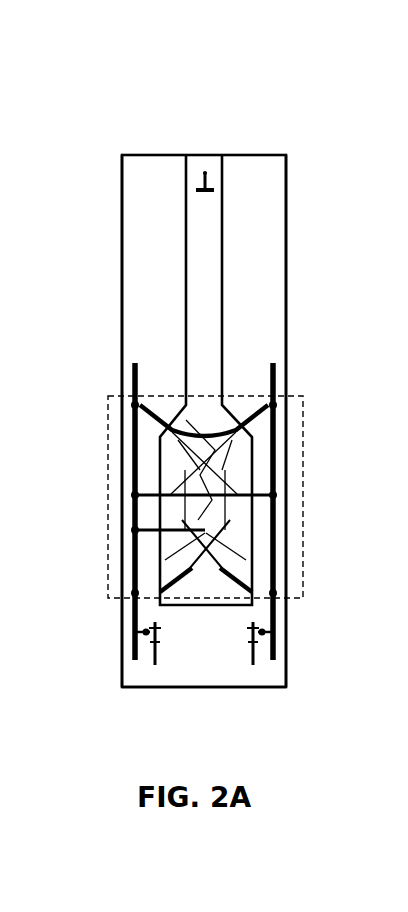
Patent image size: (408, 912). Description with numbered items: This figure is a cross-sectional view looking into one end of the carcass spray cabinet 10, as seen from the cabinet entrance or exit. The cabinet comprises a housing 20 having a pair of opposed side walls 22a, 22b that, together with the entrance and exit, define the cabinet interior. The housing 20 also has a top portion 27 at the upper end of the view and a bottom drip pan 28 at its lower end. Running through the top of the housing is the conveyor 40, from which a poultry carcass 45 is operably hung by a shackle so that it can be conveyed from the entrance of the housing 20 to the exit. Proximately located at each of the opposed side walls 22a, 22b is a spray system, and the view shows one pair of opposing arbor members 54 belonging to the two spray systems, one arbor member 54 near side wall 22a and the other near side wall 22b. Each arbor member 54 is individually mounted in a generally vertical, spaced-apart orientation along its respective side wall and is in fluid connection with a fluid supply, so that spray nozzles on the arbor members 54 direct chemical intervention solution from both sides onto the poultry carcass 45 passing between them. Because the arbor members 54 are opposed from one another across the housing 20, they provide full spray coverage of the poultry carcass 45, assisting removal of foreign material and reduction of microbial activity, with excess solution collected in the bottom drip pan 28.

The carcass spray cabinet 10 is at (133, 58).
The housing 20 is at (122, 172).
The side wall 22a is at (122, 298).
The side wall 22b is at (286, 312).
The top portion 27 is at (245, 155).
The bottom drip pan 28 is at (205, 687).
The conveyor 40 is at (215, 187).
The poultry carcass 45 is at (205, 525).
The arbor member 54 is at (280, 460).